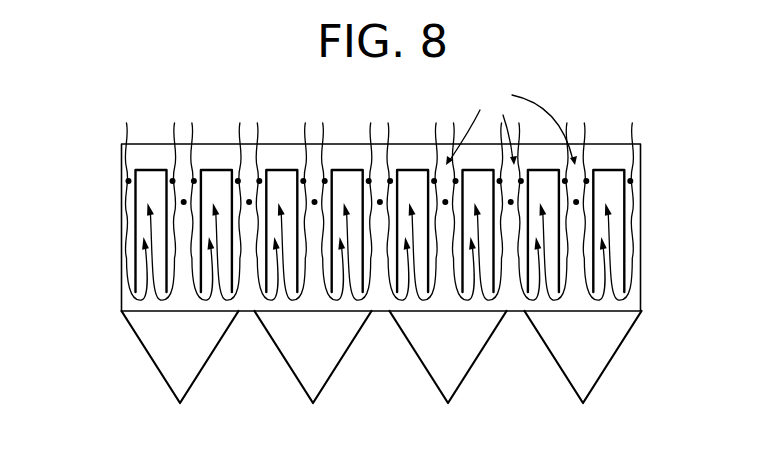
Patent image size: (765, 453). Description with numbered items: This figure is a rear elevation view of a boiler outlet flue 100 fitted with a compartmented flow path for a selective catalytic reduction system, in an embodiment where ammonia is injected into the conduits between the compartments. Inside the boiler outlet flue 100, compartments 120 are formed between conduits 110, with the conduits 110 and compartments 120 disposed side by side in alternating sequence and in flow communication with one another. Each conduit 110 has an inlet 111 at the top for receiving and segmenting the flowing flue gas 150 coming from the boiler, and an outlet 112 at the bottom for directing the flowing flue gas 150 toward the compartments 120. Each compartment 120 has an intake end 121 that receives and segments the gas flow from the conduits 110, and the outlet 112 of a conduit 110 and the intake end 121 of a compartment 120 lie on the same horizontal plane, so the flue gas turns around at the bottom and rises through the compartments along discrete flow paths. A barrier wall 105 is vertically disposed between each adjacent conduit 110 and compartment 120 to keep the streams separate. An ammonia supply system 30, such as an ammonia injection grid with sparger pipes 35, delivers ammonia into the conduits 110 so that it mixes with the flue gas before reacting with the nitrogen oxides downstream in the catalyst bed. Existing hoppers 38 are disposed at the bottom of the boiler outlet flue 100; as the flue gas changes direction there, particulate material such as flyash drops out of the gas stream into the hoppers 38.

The boiler outlet flue 100 is at (577, 82).
The compartment 120 is at (143, 190).
The barrier wall 105 is at (192, 160).
The flowing flue gas 150 is at (256, 140).
The conduit 110 is at (370, 128).
The inlet 111 is at (378, 168).
The ammonia supply system 30 is at (511, 123).
The sparger pipe 35 is at (632, 177).
The intake end 121 is at (152, 298).
The outlet 112 is at (184, 293).
The hopper 38 is at (598, 345).